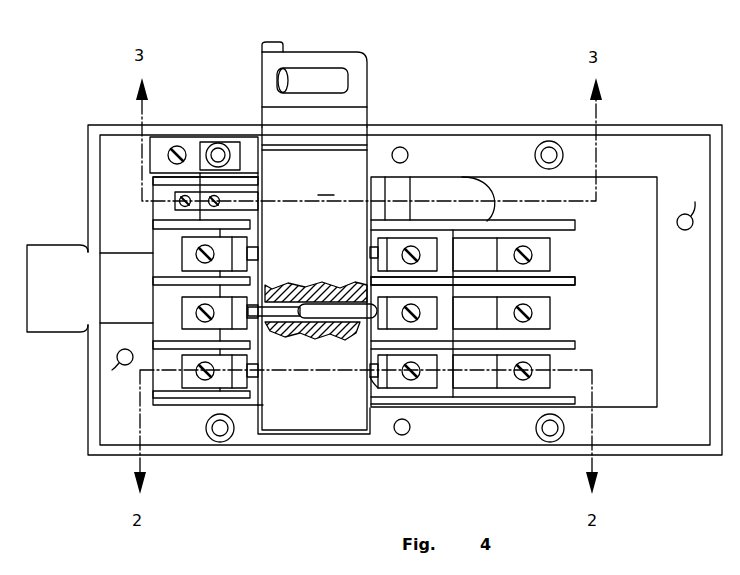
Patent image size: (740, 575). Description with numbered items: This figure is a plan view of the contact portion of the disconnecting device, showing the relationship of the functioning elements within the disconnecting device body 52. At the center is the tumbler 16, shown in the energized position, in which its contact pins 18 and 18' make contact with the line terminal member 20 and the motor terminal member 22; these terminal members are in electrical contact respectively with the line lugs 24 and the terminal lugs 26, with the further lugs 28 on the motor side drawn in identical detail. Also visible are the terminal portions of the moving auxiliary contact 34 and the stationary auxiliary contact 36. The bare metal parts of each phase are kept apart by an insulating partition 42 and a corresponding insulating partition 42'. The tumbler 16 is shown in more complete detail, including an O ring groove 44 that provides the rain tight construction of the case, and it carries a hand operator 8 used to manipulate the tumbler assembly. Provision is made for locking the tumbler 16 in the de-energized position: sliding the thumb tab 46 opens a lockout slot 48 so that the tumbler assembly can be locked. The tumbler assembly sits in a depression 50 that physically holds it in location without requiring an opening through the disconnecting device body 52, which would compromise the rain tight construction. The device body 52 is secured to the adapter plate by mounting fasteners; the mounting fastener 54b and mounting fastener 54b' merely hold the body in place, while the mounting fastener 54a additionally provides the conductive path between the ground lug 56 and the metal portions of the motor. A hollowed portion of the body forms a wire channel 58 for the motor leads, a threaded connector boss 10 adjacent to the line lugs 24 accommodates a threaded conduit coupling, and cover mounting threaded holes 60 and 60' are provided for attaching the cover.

The hand operator 8 is at (368, 90).
The threaded connector boss 10 is at (65, 245).
The tumbler 16 is at (314, 278).
The contact pins 18 is at (312, 300).
The contact pins 18' is at (352, 392).
The line terminal member 20 is at (259, 245).
The motor terminal member 22 is at (372, 356).
The line lugs 24 is at (182, 300).
The terminal lugs 26 is at (437, 248).
The right middle terminal 28 is at (552, 302).
The moving auxiliary contact 34 is at (256, 198).
The stationary auxiliary contact 36 is at (153, 200).
The insulating partition 42 is at (181, 223).
The insulating partition 42' is at (497, 292).
The O ring groove 44 is at (305, 145).
The thumb tab 46 is at (271, 42).
The lockout slot 48 is at (282, 73).
The depression 50 is at (333, 436).
The disconnecting device body 52 is at (482, 458).
The mounting fastener 54a is at (213, 140).
The mounting fastener 54b is at (534, 136).
The mounting fastener 54b' is at (211, 448).
The ground lug 56 is at (189, 137).
The wire channel 58 is at (446, 193).
The cover mounting threaded holes 60 is at (410, 133).
The cover mounting threaded holes 60' is at (400, 295).